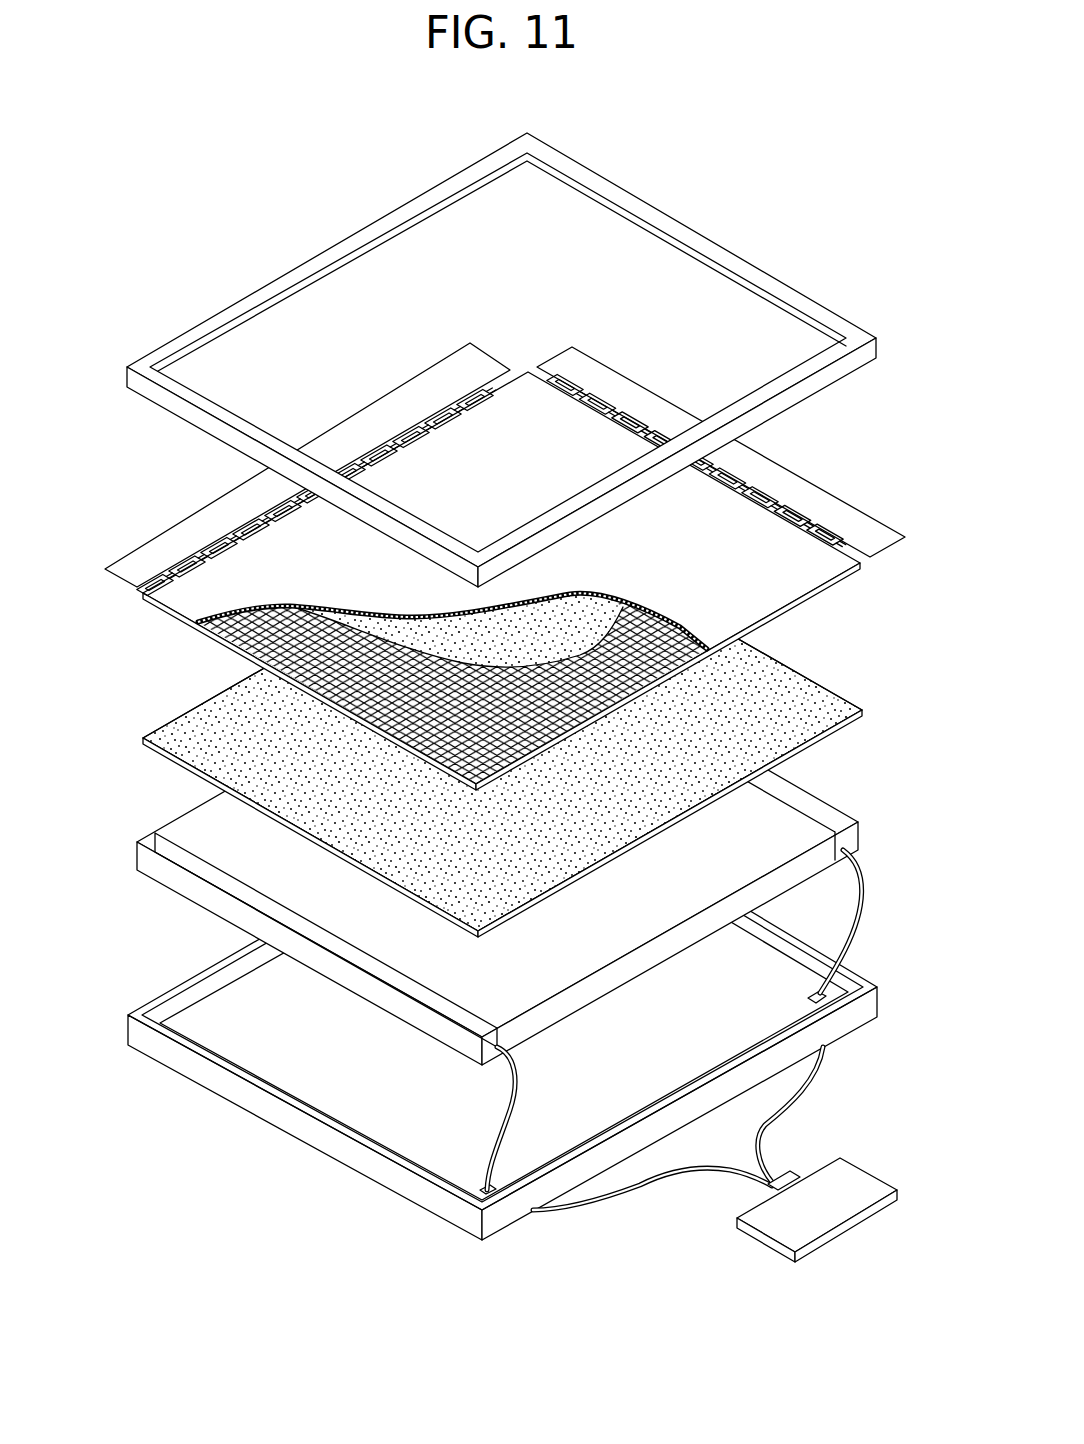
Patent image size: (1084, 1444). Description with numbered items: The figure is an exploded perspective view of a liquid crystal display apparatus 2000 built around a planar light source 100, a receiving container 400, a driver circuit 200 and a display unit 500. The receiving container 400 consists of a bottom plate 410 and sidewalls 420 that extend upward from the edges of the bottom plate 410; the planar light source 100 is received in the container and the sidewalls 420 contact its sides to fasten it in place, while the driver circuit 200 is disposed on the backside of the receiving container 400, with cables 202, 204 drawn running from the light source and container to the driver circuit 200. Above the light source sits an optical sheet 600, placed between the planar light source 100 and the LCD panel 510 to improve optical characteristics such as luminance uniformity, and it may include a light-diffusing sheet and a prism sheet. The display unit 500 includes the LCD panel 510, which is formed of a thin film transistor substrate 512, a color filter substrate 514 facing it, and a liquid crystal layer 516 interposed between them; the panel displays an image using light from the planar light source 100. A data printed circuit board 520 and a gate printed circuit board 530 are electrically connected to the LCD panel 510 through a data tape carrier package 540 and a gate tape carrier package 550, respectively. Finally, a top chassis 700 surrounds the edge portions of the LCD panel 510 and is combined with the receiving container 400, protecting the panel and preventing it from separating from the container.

The liquid crystal display apparatus 2000 is at (422, 114).
The top chassis 700 is at (165, 440).
The display unit 500 is at (506, 539).
The LCD panel 510 is at (537, 581).
The thin film transistor substrate 512 is at (243, 638).
The color filter substrate 514 is at (766, 586).
The liquid crystal layer 516 is at (585, 607).
The data printed circuit board 520 is at (438, 370).
The gate printed circuit board 530 is at (815, 495).
The data tape carrier package 540 is at (483, 383).
The gate tape carrier package 550 is at (568, 387).
The optical sheet 600 is at (146, 760).
The planar light source 100 is at (870, 843).
The receiving container 400 is at (480, 1010).
The bottom plate 410 is at (397, 1140).
The sidewalls 420 is at (258, 1108).
The driver circuit 200 is at (783, 1227).
The first flexible cable 202 is at (615, 1200).
The second flexible cable 204 is at (763, 1140).